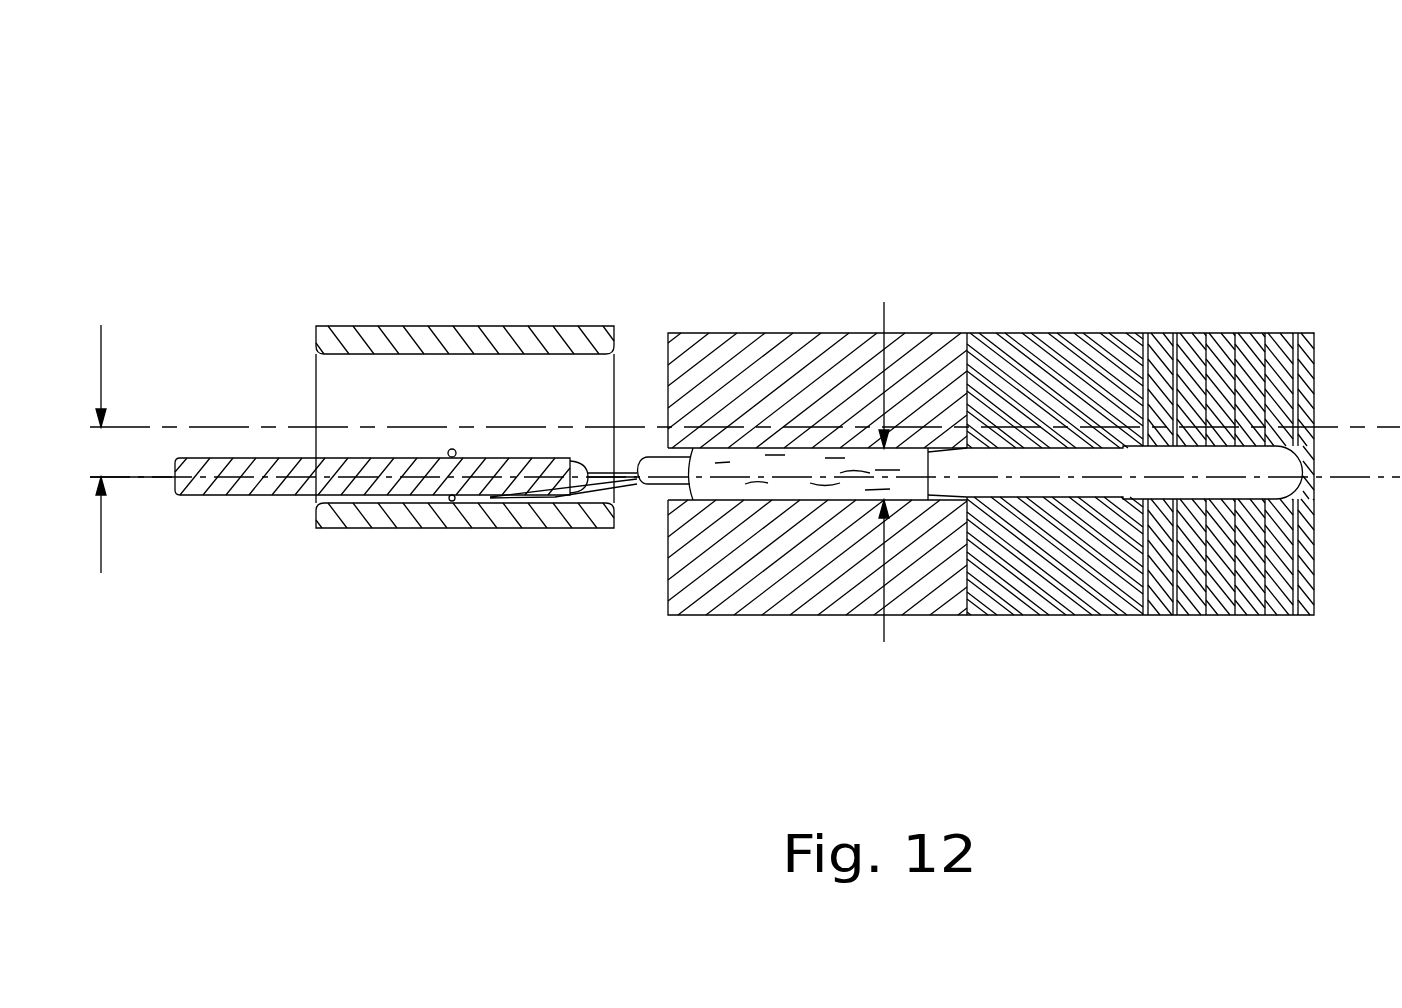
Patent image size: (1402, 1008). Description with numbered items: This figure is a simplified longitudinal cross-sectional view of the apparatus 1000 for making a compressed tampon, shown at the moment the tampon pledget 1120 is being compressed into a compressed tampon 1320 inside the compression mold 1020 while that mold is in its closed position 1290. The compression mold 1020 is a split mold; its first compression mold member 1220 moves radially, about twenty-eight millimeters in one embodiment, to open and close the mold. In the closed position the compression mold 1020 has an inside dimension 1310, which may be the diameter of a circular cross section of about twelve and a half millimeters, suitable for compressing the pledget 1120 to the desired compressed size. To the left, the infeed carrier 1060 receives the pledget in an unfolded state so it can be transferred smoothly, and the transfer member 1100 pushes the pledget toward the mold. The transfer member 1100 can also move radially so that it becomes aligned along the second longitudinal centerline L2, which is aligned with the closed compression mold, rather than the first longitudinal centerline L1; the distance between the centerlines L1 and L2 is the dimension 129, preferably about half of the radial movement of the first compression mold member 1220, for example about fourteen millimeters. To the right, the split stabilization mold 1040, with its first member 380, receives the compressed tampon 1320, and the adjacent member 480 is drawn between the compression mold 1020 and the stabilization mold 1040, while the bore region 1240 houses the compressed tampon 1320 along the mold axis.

The apparatus 1000 is at (795, 162).
The infeed carrier 1060 is at (456, 326).
The transfer member 1100 is at (247, 482).
The tampon pledget 1120 is at (703, 493).
The compressed tampon 1320 is at (728, 462).
The compression mold 1020 is at (773, 360).
The first compression mold member 1220 is at (800, 573).
The bore 1240 is at (838, 348).
The closed position 1290 is at (936, 345).
The inside dimension 1310 is at (885, 496).
The second block 480 is at (1055, 353).
The first member 380 is at (1080, 585).
The stabilization mold 1040 is at (1115, 377).
The dimension 129 is at (101, 474).
The first longitudinal centerline L1 is at (133, 427).
The second longitudinal centerline L2 is at (130, 478).